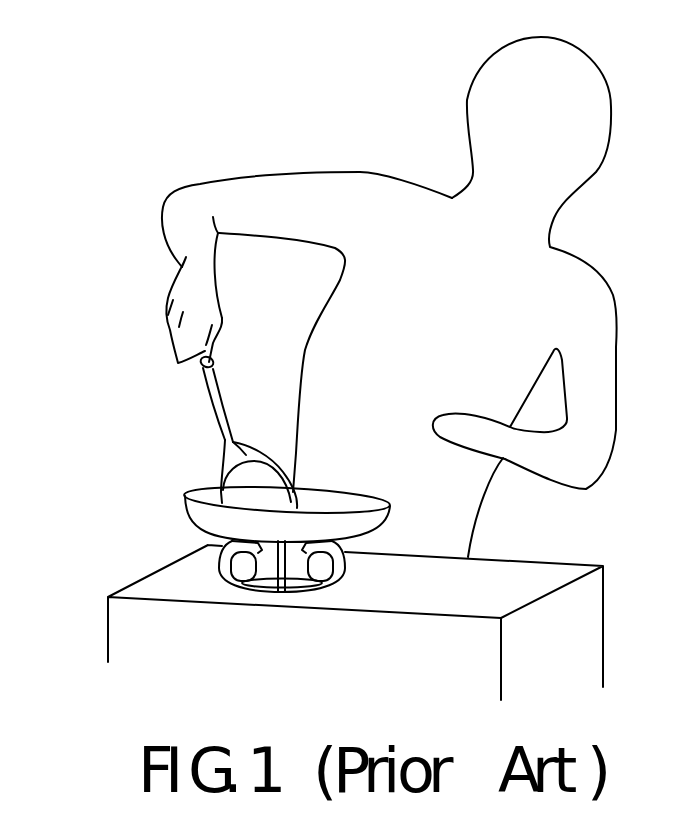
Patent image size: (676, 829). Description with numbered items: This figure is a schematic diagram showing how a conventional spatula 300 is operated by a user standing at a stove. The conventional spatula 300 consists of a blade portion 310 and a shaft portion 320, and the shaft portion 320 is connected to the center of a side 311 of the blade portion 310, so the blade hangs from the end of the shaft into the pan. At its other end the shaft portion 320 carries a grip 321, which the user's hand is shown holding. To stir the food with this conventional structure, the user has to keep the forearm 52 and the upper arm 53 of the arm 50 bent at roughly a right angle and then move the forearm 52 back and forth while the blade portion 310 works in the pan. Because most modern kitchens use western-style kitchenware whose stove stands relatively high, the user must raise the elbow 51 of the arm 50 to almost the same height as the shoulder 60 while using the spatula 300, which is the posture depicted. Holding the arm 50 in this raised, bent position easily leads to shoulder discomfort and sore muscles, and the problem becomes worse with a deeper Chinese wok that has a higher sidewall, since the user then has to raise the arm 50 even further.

The arm 50 is at (245, 140).
The elbow 51 is at (198, 212).
The forearm 52 is at (185, 242).
The upper arm 53 is at (313, 205).
The shoulder 60 is at (422, 253).
The spatula 300 is at (100, 418).
The blade portion 310 is at (245, 483).
The side 311 is at (247, 452).
The shaft portion 320 is at (223, 415).
The grip 321 is at (199, 365).